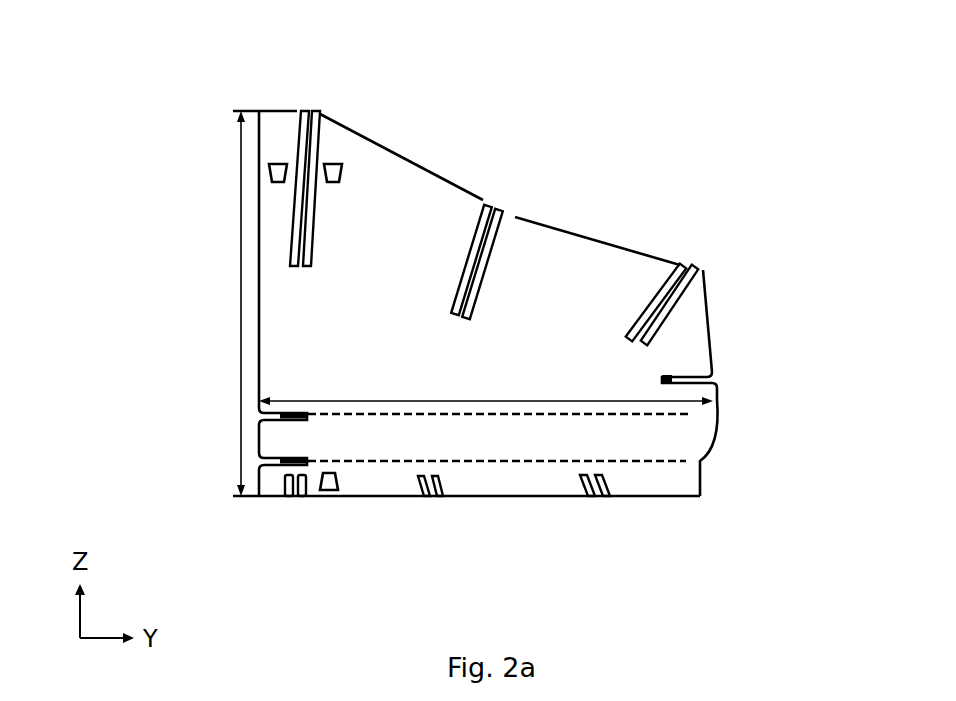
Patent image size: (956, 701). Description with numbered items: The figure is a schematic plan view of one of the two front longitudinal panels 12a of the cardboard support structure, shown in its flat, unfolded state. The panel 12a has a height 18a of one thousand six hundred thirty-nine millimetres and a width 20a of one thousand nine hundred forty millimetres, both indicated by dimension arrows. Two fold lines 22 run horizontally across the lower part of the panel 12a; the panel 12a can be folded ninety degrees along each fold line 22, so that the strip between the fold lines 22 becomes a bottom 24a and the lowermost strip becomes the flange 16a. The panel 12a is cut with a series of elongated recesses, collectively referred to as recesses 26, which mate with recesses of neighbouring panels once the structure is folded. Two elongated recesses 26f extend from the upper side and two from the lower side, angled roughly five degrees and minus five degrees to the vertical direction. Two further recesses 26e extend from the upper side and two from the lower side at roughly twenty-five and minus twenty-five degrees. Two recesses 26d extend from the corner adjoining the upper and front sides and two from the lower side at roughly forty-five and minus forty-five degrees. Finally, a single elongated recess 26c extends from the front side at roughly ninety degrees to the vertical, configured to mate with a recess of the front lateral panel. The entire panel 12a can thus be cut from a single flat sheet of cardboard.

The front longitudinal panel 12a is at (152, 67).
The flange 16a is at (543, 483).
The height 18a is at (216, 303).
The width 20a is at (486, 385).
The fold lines 22 is at (688, 417).
The bottom 24a is at (515, 457).
The recesses 26 is at (278, 415).
The elongated recess 26c is at (660, 378).
The elongated recesses 26d is at (672, 267).
The elongated recesses 26e is at (480, 237).
The elongated recesses 26f is at (297, 130).